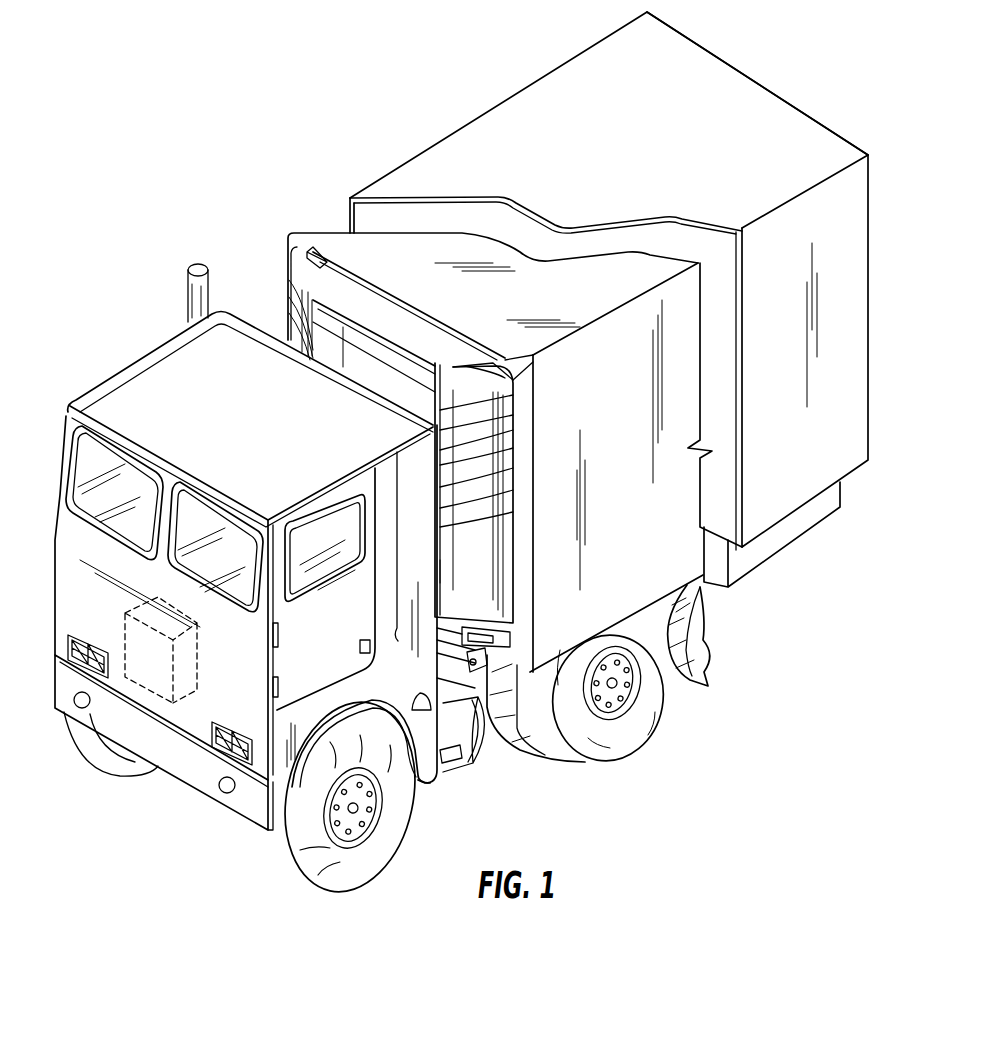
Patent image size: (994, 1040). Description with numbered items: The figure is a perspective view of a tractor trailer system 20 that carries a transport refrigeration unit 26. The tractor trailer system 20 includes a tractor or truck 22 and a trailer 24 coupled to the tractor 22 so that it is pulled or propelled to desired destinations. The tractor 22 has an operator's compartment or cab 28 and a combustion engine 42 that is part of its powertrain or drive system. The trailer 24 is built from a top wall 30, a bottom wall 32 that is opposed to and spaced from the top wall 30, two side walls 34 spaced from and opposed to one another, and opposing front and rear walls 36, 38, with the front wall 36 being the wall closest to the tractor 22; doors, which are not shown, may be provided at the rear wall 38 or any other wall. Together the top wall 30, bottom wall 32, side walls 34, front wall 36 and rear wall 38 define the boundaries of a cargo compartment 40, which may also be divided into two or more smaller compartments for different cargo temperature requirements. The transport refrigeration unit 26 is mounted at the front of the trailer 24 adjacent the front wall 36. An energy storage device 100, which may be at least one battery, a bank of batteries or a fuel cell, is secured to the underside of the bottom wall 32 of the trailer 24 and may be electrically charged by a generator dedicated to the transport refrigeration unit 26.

The tractor trailer system 20 is at (140, 140).
The tractor 22 is at (97, 390).
The trailer 24 is at (467, 118).
The transport refrigeration unit 26 is at (315, 258).
The cab 28 is at (323, 562).
The top wall 30 is at (525, 87).
The bottom wall 32 is at (815, 500).
The side walls 34 is at (855, 427).
The front wall 36 is at (485, 338).
The rear wall 38 is at (773, 92).
The cargo compartment 40 is at (672, 238).
The combustion engine 42 is at (155, 685).
The energy storage device 100 is at (748, 572).